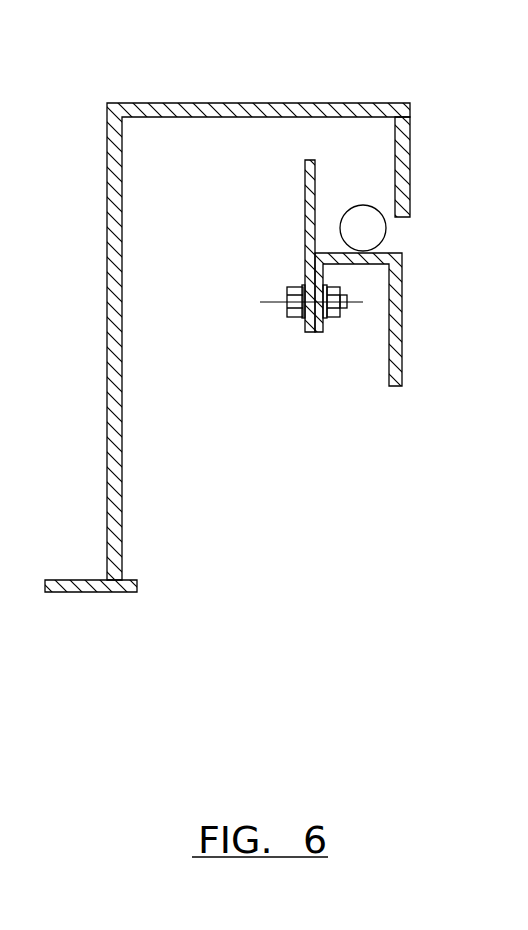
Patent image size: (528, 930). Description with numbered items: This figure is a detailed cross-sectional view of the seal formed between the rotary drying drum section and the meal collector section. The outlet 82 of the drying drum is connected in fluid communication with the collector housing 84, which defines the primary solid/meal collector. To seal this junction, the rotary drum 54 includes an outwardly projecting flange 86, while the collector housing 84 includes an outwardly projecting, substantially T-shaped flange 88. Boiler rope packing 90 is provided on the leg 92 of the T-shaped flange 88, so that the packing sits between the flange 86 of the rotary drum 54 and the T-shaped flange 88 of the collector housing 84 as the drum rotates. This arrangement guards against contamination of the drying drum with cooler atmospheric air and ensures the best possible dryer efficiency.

The rotary drum 54 is at (90, 593).
The outlet 82 is at (273, 103).
The collector housing 84 is at (403, 355).
The outwardly projecting flange 86 is at (412, 152).
The T-shaped flange 88 is at (305, 172).
The boiler rope packing 90 is at (387, 232).
The leg 92 is at (367, 267).